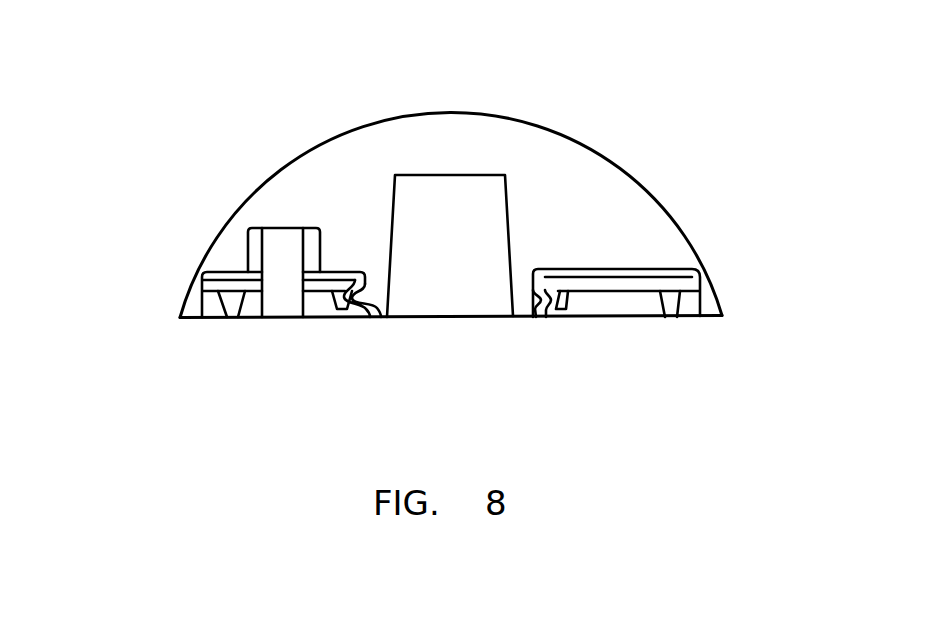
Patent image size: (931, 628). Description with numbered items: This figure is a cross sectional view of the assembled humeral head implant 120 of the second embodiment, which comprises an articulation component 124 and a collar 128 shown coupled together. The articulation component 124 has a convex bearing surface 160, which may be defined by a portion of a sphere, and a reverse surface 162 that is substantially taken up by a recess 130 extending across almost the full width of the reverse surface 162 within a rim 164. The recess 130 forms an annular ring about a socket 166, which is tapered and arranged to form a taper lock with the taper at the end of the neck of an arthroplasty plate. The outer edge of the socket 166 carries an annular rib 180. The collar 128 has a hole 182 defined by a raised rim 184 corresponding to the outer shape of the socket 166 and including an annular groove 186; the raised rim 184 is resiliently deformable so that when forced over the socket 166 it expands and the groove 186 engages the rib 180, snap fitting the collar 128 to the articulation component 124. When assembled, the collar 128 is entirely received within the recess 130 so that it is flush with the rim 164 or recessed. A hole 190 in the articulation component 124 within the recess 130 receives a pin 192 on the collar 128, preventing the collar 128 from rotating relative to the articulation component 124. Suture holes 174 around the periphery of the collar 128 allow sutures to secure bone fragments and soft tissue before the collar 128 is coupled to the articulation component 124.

The humeral head implant 120 is at (203, 222).
The articulation component 124 is at (445, 143).
The collar 128 is at (623, 302).
The recess 130 is at (215, 287).
The convex bearing surface 160 is at (600, 150).
The reverse surface 162 is at (631, 268).
The rim 164 is at (193, 313).
The socket 166 is at (440, 292).
The suture holes 174 is at (232, 307).
The annular rib 180 is at (375, 318).
The hole 182 is at (360, 308).
The raised rim 184 is at (332, 290).
The annular groove 186 is at (547, 305).
The hole 190 is at (255, 228).
The pin 192 is at (287, 242).